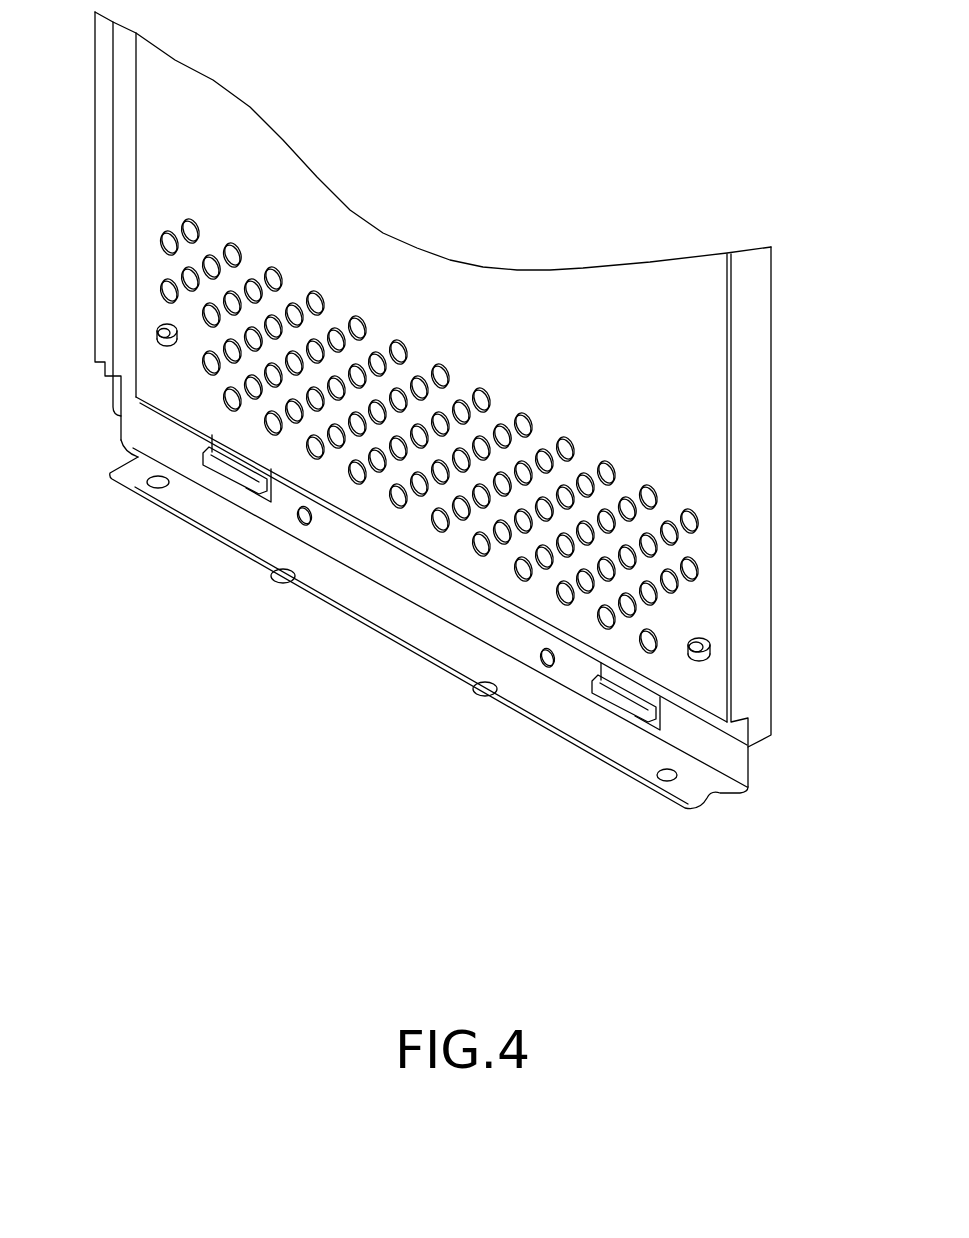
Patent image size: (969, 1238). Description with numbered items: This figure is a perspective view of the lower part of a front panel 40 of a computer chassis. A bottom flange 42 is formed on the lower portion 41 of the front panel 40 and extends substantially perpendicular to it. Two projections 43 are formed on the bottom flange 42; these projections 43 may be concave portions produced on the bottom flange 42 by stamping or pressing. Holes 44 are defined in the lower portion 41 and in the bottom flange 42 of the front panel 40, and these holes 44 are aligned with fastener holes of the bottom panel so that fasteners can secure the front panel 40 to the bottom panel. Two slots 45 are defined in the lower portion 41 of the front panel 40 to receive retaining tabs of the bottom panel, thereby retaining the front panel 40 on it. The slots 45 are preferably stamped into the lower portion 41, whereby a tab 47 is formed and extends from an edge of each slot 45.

The front panel 40 is at (773, 370).
The lower portion 41 is at (365, 553).
The bottom flange 42 is at (423, 640).
The projection 43 is at (280, 582).
The hole 44 is at (300, 518).
The slot 45 is at (265, 493).
The tab 47 is at (213, 453).